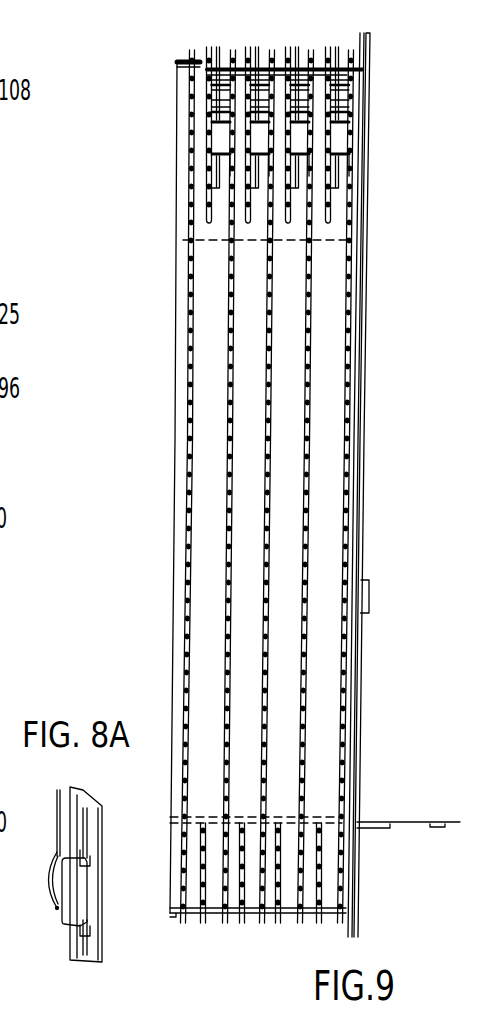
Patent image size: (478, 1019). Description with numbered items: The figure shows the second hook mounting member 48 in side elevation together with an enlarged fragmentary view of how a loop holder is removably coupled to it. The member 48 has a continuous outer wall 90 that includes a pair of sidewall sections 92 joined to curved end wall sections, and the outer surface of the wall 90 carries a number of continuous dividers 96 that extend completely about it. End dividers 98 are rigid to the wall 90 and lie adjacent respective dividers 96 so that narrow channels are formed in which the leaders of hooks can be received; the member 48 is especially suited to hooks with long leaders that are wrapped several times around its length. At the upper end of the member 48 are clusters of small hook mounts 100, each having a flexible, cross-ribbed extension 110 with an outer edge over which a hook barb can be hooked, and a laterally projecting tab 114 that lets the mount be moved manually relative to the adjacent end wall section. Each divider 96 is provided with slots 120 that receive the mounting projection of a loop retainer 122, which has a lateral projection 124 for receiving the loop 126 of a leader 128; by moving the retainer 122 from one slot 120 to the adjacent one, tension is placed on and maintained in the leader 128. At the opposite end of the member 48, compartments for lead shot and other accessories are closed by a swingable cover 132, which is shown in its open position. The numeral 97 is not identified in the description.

In FIG. 9, the second hook mounting member 48 is at (371, 250).
In FIG. 9, the outer wall 90 is at (326, 496).
In FIG. 8A, the outer wall 90 is at (96, 797).
In FIG. 9, the sidewall section 92 is at (330, 527).
In FIG. 8A, the sidewall section 92 is at (96, 818).
In FIG. 9, the divider 96 is at (345, 460).
In FIG. 8A, the divider 96 is at (86, 832).
In FIG. 9, the frame rail 97 is at (365, 118).
In FIG. 9, the end divider 98 is at (213, 22).
In FIG. 9, the hook mount 100 is at (257, 126).
In FIG. 9, the flexible extension 110 is at (332, 68).
In FIG. 9, the tab 114 is at (252, 100).
In FIG. 8A, the slot 120 is at (85, 852).
In FIG. 8A, the loop retainer 122 is at (84, 894).
In FIG. 8A, the lateral projection 124 is at (56, 912).
In FIG. 8A, the loop 126 is at (50, 868).
In FIG. 8A, the leader 128 is at (56, 796).
In FIG. 9, the swingable cover 132 is at (411, 822).